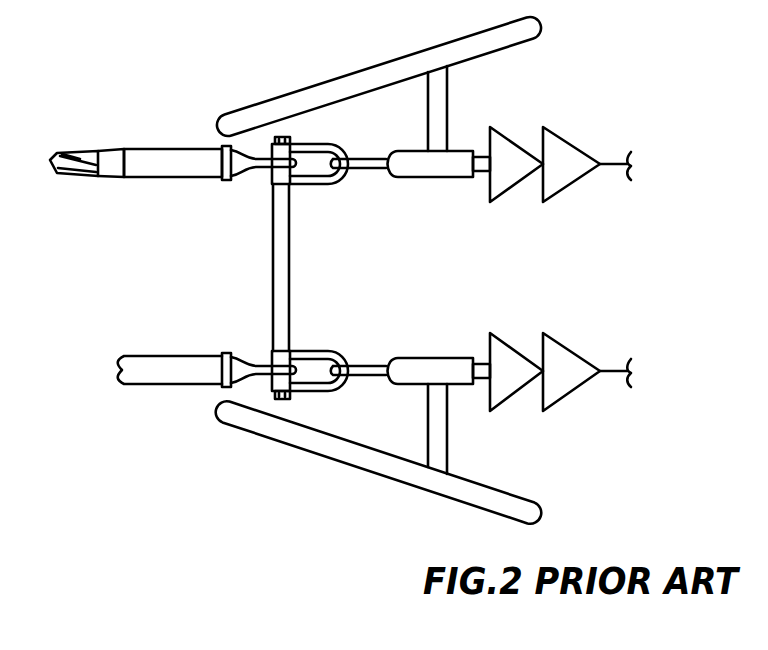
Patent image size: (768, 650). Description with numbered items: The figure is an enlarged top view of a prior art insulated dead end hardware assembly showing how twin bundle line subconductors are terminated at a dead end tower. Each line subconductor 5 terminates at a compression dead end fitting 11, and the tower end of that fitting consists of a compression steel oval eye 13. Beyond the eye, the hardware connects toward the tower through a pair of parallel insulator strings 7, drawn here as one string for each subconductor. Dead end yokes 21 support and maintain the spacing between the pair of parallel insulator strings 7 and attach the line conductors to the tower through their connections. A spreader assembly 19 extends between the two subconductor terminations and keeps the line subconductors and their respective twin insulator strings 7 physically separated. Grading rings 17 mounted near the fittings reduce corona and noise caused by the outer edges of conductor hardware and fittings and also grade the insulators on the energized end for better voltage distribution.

The line subconductor 5 is at (79, 164).
The insulator string 7 is at (504, 158).
The compression dead end fitting 11 is at (157, 165).
The compression steel oval eye 13 is at (258, 160).
The grading ring 17 is at (346, 92).
The spreader assembly 19 is at (281, 278).
The dead end yoke 21 is at (418, 170).